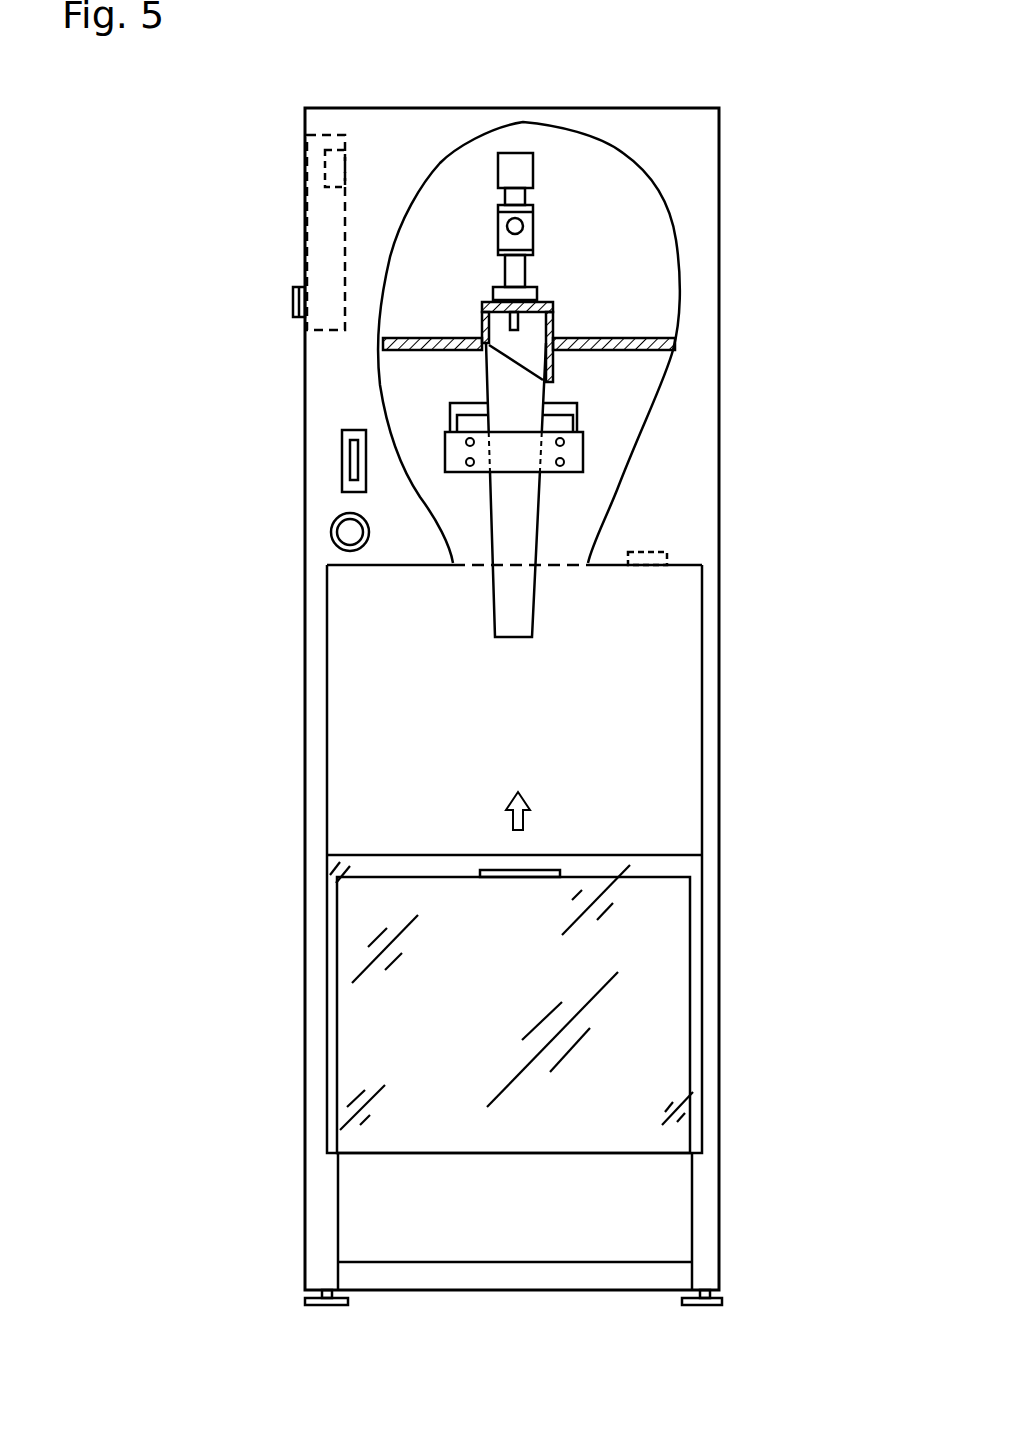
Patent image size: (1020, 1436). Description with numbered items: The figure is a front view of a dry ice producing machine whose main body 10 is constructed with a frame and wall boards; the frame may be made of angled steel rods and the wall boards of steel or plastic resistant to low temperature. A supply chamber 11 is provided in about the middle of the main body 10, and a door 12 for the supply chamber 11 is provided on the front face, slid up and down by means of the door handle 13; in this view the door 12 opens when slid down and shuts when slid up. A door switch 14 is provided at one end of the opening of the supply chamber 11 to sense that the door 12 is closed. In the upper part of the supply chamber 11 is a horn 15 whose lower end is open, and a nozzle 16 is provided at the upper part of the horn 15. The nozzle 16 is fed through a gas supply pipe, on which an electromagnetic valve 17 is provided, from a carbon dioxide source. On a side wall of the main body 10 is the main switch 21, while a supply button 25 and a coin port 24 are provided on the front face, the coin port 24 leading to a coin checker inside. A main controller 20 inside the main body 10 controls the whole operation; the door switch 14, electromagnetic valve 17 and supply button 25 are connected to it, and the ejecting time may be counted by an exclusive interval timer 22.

The main body 10 is at (288, 742).
The supply chamber 11 is at (640, 670).
The door 12 is at (637, 975).
The door handle 13 is at (535, 870).
The door switch 14 is at (667, 553).
The horn 15 is at (513, 552).
The nozzle 16 is at (522, 320).
The electromagnetic valve 17 is at (525, 170).
The main controller 20 is at (320, 232).
The main switch 21 is at (293, 303).
The interval timer 22 is at (330, 167).
The coin port 24 is at (342, 470).
The supply button 25 is at (331, 530).